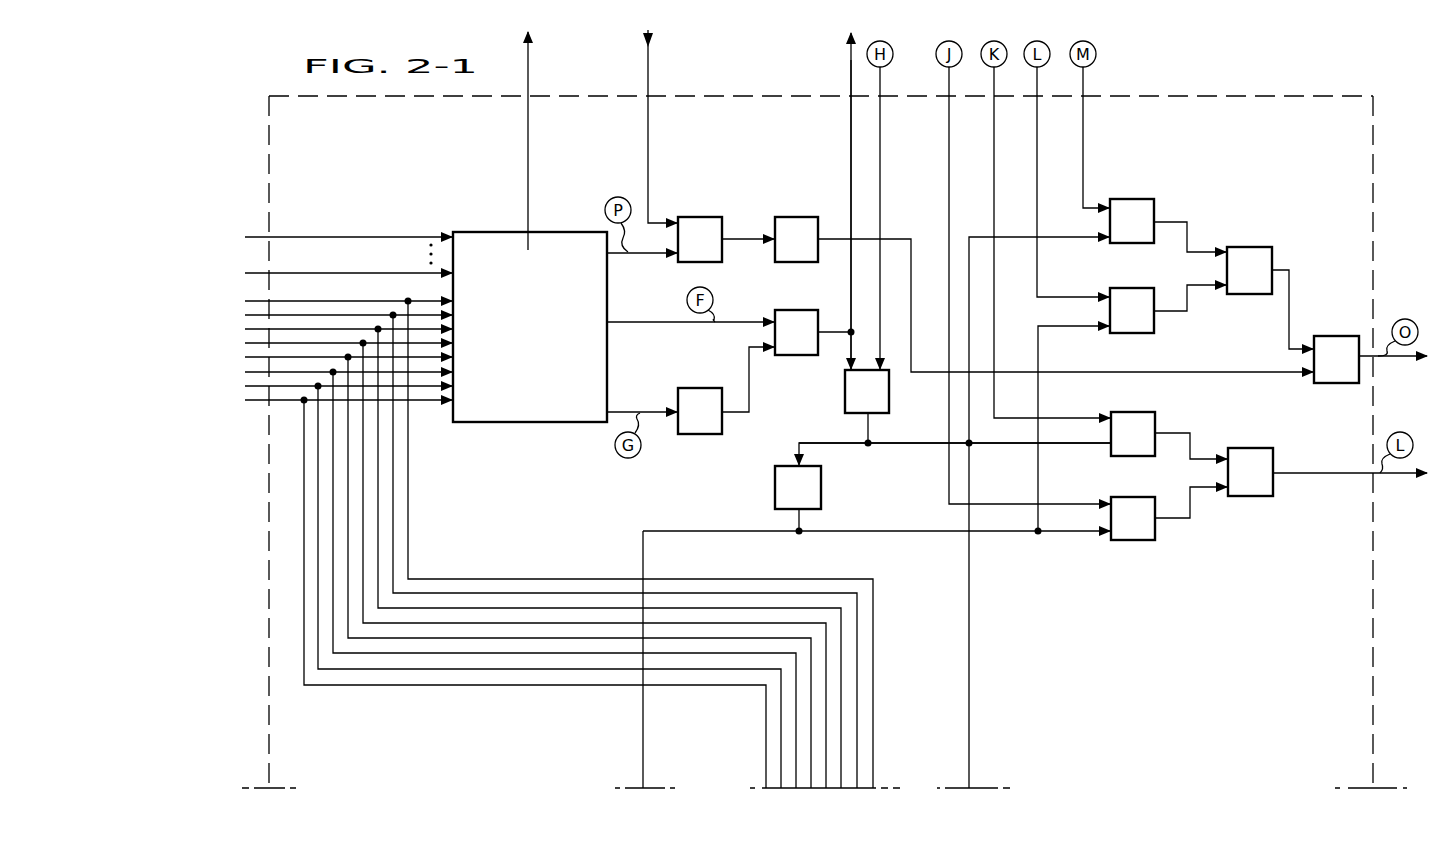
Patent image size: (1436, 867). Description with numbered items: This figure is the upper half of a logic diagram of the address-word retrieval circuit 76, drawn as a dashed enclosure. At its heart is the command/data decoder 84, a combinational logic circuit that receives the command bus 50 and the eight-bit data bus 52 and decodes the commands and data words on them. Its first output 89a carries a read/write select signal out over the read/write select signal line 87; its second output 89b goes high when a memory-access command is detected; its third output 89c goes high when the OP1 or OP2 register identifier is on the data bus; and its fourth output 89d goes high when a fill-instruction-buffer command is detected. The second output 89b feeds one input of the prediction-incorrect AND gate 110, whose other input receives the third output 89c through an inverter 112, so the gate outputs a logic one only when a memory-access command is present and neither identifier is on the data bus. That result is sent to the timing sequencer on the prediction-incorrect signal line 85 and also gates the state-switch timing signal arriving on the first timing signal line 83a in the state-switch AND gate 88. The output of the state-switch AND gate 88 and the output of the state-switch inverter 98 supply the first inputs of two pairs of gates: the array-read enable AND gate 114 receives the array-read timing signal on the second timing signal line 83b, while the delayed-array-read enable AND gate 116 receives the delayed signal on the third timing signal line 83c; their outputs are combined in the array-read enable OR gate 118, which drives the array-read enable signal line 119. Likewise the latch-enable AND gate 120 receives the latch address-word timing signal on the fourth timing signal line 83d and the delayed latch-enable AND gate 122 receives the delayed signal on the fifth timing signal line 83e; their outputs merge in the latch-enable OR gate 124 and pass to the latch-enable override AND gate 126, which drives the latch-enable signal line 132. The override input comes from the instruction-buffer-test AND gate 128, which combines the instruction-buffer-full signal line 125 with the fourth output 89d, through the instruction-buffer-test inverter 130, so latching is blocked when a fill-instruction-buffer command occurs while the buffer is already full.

The address-word retrieval circuit 76 is at (1187, 94).
The command/data decoder 84 is at (518, 387).
The command bus 50 is at (353, 234).
The data bus 52 is at (353, 303).
The read/write select signal line 87 is at (528, 118).
The first output 89a is at (528, 232).
The second output 89b is at (607, 322).
The third output 89c is at (607, 412).
The fourth output 89d is at (607, 253).
The instruction-buffer-full signal line 125 is at (648, 115).
The instruction-buffer-test AND gate 128 is at (688, 217).
The instruction-buffer-test inverter 130 is at (788, 217).
The prediction-incorrect AND gate 110 is at (790, 310).
The inverter 112 is at (690, 388).
The state-switch AND gate 88 is at (845, 393).
The state-switch inverter 98 is at (775, 486).
The prediction-incorrect signal line 85 is at (851, 128).
The first timing signal line 83a is at (880, 120).
The second timing signal line 83b is at (949, 150).
The third timing signal line 83c is at (994, 105).
The fourth timing signal line 83d is at (1037, 150).
The fifth timing signal line 83e is at (1083, 126).
The delayed latch-enable AND gate 122 is at (1120, 198).
The latch-enable AND gate 120 is at (1120, 288).
The latch-enable OR gate 124 is at (1243, 247).
The latch-enable override AND gate 126 is at (1326, 383).
The latch-enable signal line 132 is at (1383, 360).
The delayed-array-read enable AND gate 116 is at (1125, 412).
The array-read enable AND gate 114 is at (1125, 497).
The array-read enable OR gate 118 is at (1250, 496).
The array-read enable signal line 119 is at (1383, 477).